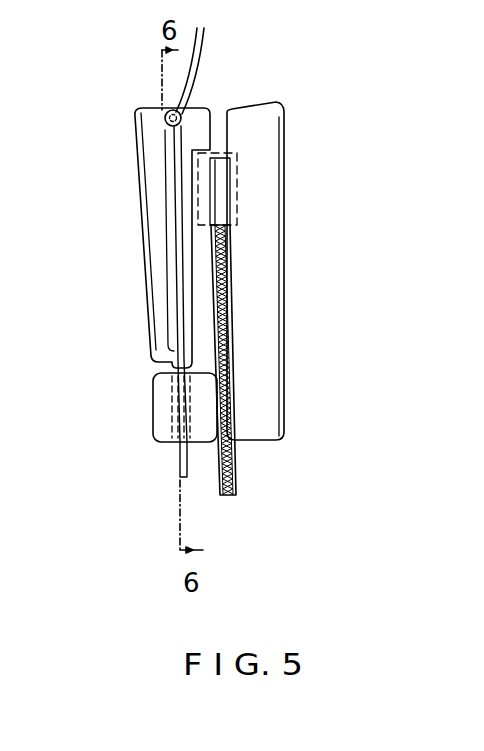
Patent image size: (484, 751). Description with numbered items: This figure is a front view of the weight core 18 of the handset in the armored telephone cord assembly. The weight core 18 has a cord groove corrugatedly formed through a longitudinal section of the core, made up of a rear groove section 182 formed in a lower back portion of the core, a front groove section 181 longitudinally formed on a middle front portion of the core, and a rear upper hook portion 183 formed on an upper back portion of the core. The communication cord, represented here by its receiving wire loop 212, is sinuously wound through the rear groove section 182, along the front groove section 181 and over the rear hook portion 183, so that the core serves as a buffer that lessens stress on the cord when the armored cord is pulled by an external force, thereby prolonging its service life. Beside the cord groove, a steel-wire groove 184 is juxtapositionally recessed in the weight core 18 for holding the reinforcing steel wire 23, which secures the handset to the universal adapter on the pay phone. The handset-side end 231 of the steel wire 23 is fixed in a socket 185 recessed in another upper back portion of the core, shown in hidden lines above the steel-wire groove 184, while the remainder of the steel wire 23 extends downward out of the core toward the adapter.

The weight core 18 is at (268, 268).
The front groove section 181 is at (147, 255).
The rear groove section 182 is at (168, 408).
The rear upper hook portion 183 is at (167, 111).
The steel-wire groove 184 is at (228, 348).
The socket 185 is at (237, 180).
The receiving wire loop 212 is at (197, 62).
The reinforcing steel wire 23 is at (235, 472).
The handset-side end 231 is at (215, 203).